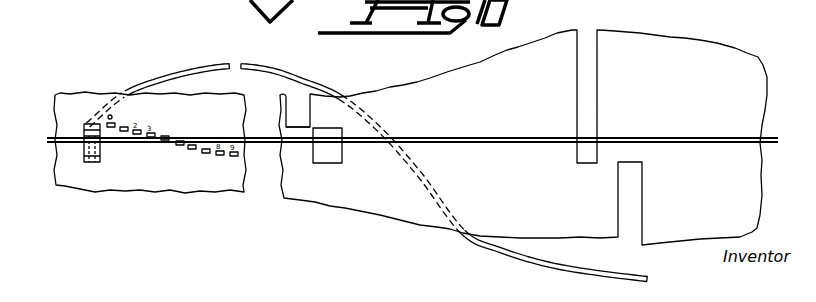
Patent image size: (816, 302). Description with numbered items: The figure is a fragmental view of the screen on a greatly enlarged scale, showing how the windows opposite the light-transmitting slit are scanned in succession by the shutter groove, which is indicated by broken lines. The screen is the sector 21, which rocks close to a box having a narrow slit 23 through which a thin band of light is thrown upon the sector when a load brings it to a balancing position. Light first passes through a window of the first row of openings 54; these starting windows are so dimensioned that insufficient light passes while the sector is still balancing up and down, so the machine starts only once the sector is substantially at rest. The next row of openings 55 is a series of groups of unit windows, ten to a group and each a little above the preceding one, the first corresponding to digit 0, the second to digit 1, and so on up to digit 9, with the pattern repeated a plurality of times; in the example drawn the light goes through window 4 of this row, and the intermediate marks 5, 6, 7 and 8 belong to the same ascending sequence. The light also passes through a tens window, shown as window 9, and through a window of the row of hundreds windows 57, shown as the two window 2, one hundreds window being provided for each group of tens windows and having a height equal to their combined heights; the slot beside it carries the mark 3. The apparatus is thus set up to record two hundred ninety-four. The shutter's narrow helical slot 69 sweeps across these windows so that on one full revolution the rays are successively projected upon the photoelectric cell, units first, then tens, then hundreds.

The helical slot 69 is at (185, 72).
The first row of openings 54 is at (84, 163).
The row of unit windows 55 is at (187, 178).
The slit 23 is at (478, 143).
The sector 21 is at (692, 110).
The row of hundreds windows 57 is at (590, 85).
The hundreds window 2 is at (579, 97).
The tab 3 is at (637, 200).
The notch 8 is at (298, 133).
The tens window 9 is at (327, 154).
The unit window digit zero 0 is at (111, 121).
The unit window digit one 1 is at (124, 125).
The unit window 4 is at (165, 134).
The scale mark 5 is at (180, 138).
The scale mark 6 is at (192, 143).
The scale mark 7 is at (206, 147).